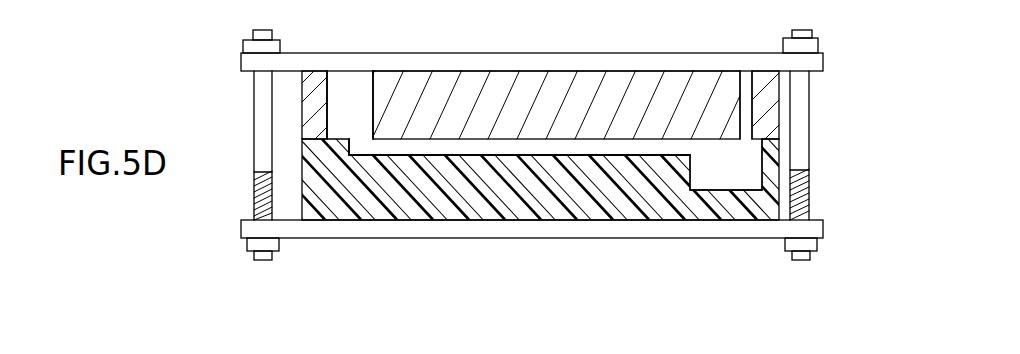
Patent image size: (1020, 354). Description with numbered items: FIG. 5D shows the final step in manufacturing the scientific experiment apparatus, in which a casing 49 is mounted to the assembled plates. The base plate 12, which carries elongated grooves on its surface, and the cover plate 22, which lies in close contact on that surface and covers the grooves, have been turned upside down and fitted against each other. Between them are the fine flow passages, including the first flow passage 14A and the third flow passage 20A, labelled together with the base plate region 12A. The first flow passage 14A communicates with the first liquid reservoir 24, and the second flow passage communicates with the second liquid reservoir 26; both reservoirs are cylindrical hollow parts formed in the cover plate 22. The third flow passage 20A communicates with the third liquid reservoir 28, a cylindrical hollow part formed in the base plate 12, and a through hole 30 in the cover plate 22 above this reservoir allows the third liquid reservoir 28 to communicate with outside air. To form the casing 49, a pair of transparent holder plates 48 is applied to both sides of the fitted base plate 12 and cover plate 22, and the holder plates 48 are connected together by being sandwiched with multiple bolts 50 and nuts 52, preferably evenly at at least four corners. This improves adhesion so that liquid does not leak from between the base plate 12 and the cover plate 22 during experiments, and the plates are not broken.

The base plate 12 is at (673, 208).
The first layer 12A is at (438, 148).
The first flow passage 14A is at (438, 148).
The third flow passage 20A is at (438, 148).
The cover plate 22 is at (640, 84).
The first liquid reservoir 24 is at (350, 82).
The second liquid reservoir 26 is at (350, 82).
The third liquid reservoir 28 is at (740, 160).
The through hole 30 is at (747, 84).
The transparent holder plate 48 is at (492, 64).
The casing 49 is at (821, 137).
The bolt 50 is at (262, 98).
The nut 52 is at (252, 243).